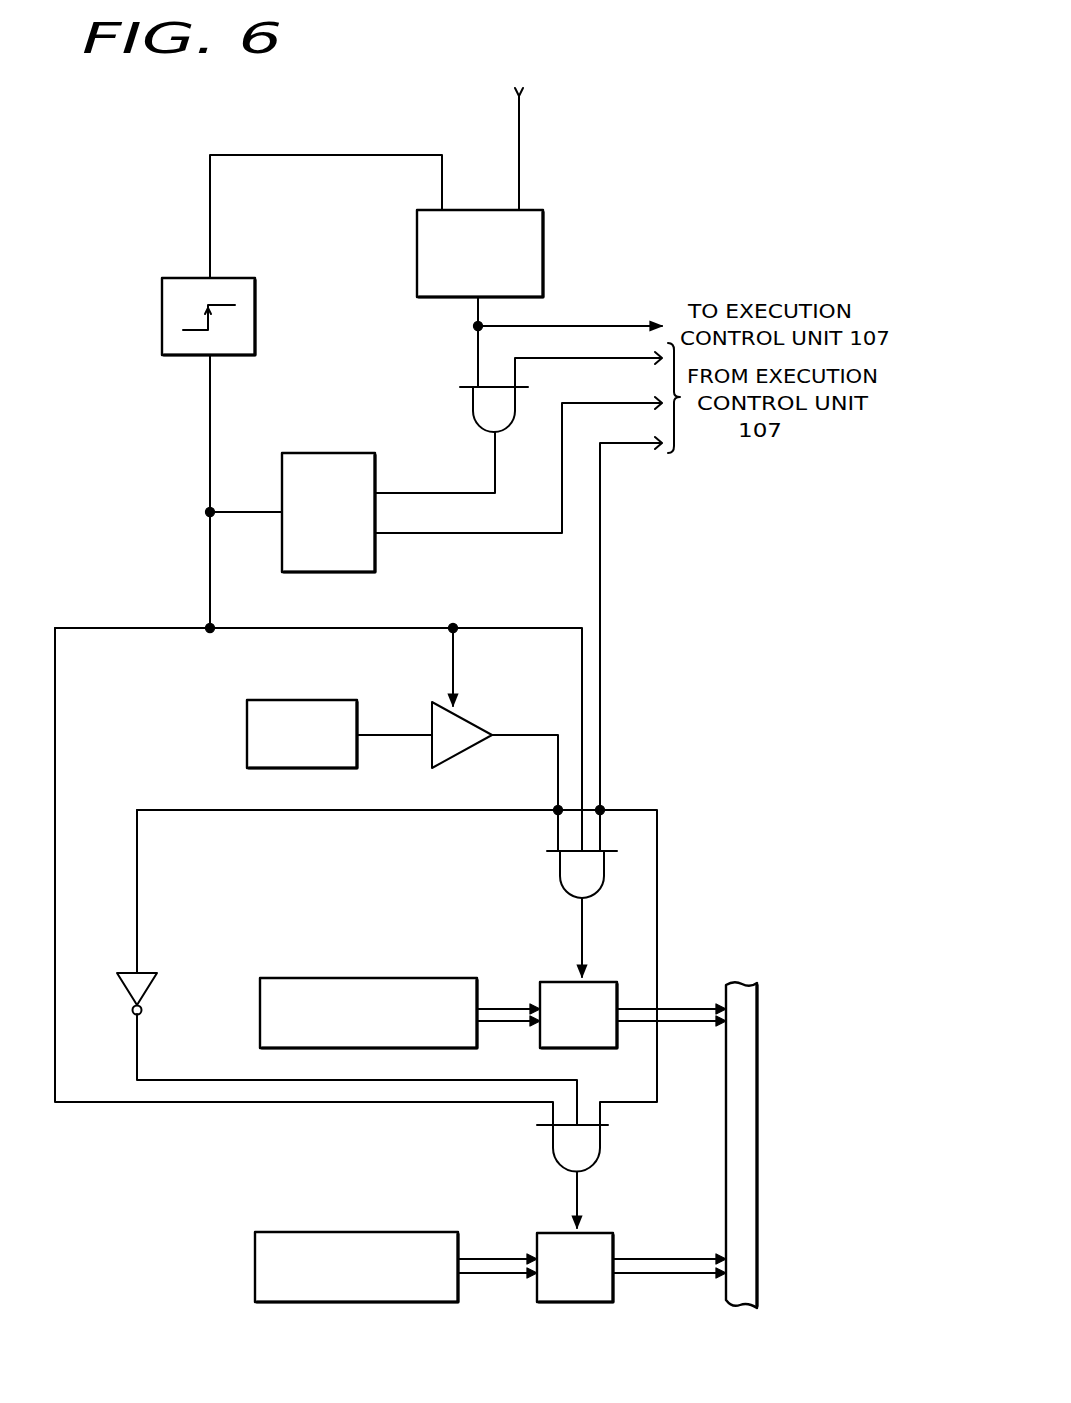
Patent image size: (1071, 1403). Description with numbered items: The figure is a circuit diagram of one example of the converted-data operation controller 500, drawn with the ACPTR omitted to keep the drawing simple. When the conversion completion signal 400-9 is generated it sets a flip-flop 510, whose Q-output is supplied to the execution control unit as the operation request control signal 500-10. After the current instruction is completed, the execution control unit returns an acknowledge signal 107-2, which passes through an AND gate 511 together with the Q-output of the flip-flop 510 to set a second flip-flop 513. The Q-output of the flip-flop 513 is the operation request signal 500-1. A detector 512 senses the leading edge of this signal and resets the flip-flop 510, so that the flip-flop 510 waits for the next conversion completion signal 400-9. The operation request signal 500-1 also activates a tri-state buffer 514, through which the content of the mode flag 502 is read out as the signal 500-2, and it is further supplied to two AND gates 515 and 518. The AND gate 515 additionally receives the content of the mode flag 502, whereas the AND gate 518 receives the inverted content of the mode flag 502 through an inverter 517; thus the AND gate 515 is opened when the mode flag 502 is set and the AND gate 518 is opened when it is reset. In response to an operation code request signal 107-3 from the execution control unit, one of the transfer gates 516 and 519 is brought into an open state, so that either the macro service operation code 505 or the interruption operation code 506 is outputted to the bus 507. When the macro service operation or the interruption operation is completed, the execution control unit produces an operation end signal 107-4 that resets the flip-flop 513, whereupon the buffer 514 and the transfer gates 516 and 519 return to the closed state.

The conversion completion signal 400-9 is at (534, 133).
The flip-flop 510 is at (543, 230).
The AND gate 511 is at (466, 407).
The detector 512 is at (162, 312).
The flip-flop 513 is at (302, 453).
The operation request signal 500-1 is at (205, 511).
The operation request control signal 500-10 is at (568, 315).
The operation end signal 107-4 is at (588, 362).
The acknowledge signal 107-2 is at (518, 456).
The operation code request signal 107-3 is at (622, 635).
The mode flag 502 is at (288, 700).
The tri-state buffer 514 is at (474, 750).
The signal 500-2 is at (510, 735).
The AND gate 515 is at (555, 870).
The inverter 517 is at (120, 973).
The macro service operation code 505 is at (343, 978).
The transfer gate 516 is at (550, 982).
The AND gate 518 is at (553, 1160).
The interruption operation code 506 is at (255, 1248).
The transfer gate 519 is at (618, 1240).
The bus 507 is at (757, 1140).
The converted-data operation controller 500 is at (790, 1320).